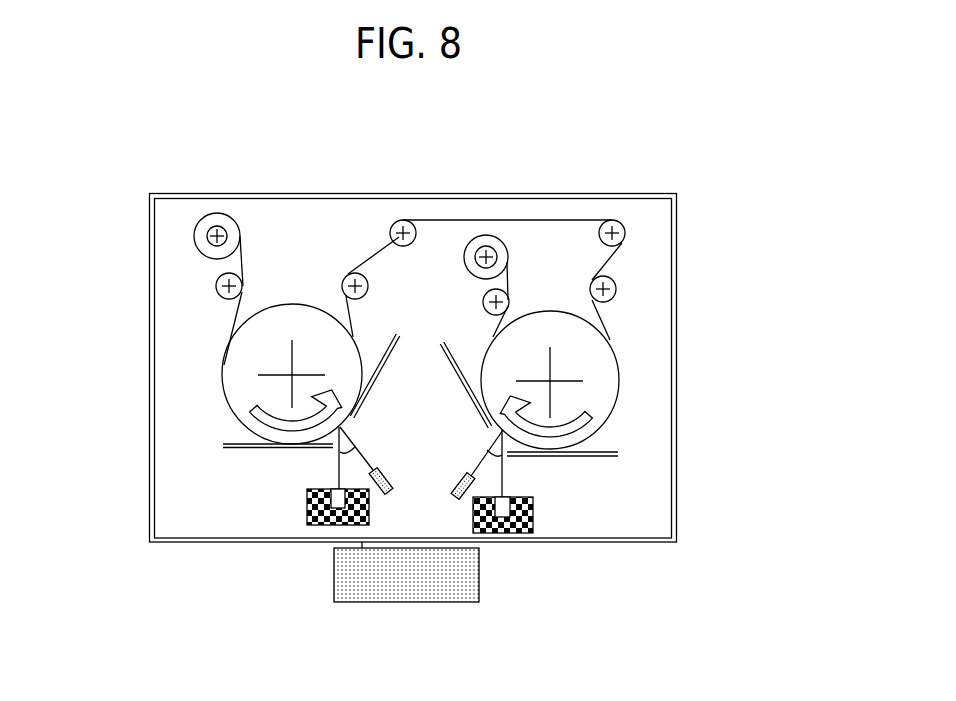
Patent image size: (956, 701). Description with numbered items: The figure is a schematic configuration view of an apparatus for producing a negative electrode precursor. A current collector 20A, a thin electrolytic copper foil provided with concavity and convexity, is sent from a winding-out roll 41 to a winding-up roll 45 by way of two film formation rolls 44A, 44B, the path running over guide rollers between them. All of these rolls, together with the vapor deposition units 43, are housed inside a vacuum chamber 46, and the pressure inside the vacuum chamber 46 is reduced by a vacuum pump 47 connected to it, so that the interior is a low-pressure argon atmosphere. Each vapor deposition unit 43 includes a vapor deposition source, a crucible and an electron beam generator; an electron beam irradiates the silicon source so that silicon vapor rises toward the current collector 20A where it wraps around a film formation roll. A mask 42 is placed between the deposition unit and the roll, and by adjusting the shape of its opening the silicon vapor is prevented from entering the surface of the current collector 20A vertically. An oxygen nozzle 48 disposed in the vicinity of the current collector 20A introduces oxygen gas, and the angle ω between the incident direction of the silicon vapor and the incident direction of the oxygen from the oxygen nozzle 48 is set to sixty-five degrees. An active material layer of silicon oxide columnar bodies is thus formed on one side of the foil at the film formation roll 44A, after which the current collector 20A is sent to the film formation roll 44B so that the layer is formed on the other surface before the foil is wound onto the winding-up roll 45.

The current collector 20A is at (237, 328).
The winding-out roll 41 is at (217, 213).
The mask 42 is at (467, 393).
The vapor deposition unit 43 is at (308, 510).
The film formation roll 44A is at (250, 382).
The film formation roll 44B is at (605, 378).
The winding-up roll 45 is at (487, 235).
The vacuum chamber 46 is at (420, 197).
The vacuum pump 47 is at (334, 572).
The oxygen nozzle 48 is at (454, 498).